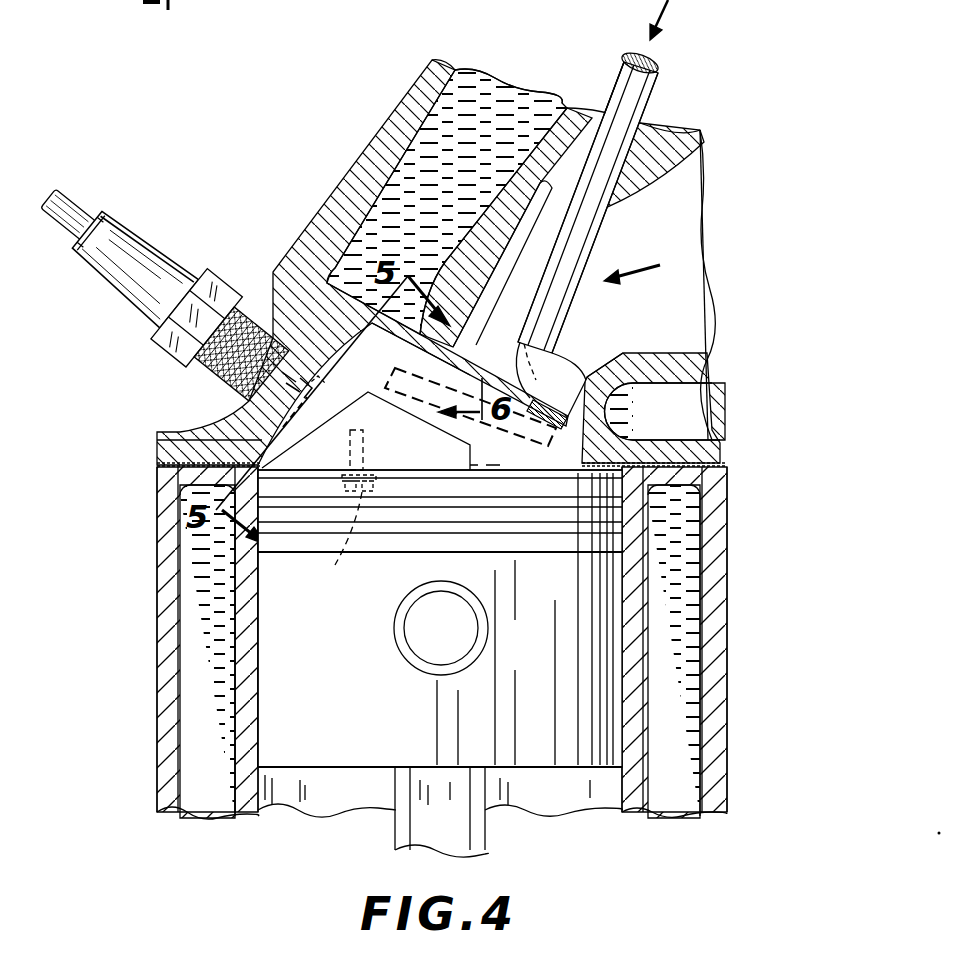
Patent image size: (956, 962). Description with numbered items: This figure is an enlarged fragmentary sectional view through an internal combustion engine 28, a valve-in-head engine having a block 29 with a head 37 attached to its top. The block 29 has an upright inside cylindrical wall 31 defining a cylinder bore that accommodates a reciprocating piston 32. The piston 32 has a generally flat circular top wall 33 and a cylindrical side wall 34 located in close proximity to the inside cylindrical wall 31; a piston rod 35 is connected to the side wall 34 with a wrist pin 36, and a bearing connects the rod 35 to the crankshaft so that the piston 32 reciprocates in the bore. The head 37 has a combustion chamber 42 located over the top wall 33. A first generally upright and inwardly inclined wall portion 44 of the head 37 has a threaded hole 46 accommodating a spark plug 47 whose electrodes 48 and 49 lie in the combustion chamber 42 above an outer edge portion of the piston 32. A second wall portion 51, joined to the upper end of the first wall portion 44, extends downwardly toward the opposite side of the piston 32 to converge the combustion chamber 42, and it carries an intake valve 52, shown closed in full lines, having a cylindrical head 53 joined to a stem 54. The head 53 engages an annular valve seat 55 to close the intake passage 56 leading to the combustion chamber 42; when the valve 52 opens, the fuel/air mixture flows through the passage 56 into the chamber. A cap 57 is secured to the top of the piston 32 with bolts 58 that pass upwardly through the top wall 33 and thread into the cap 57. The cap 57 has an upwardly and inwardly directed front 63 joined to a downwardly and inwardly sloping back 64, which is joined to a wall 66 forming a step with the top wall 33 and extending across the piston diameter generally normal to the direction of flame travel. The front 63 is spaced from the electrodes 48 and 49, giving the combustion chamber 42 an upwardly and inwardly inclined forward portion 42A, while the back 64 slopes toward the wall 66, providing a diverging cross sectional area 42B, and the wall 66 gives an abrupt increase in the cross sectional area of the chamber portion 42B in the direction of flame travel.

The internal combustion engine 28 is at (748, 220).
The block 29 is at (157, 708).
The inside cylindrical wall 31 is at (305, 795).
The piston 32 is at (532, 722).
The top wall 33 is at (575, 480).
The cylindrical side wall 34 is at (262, 656).
The connecting rod 35 is at (395, 826).
The wrist pin 36 is at (488, 643).
The head 37 is at (318, 228).
The combustion chamber 42 is at (385, 366).
The forward portion of combustion chamber 42A is at (157, 440).
The diverging cross sectional area of combustion chamber 42B is at (600, 428).
The first wall portion 44 is at (192, 428).
The threaded hole 46 is at (227, 394).
The spark plug 47 is at (152, 252).
The electrode 48 is at (315, 372).
The electrode 49 is at (329, 389).
The second wall portion 51 is at (604, 368).
The intake valve 52 is at (566, 256).
The cylindrical head 53 is at (532, 383).
The stem 54 is at (652, 96).
The annular valve seat 55 is at (570, 398).
The intake passage 56 is at (672, 283).
The cap 57 is at (408, 452).
The bolts 58 is at (337, 541).
The front 63 is at (312, 412).
The back 64 is at (410, 414).
The wall 66 is at (488, 464).